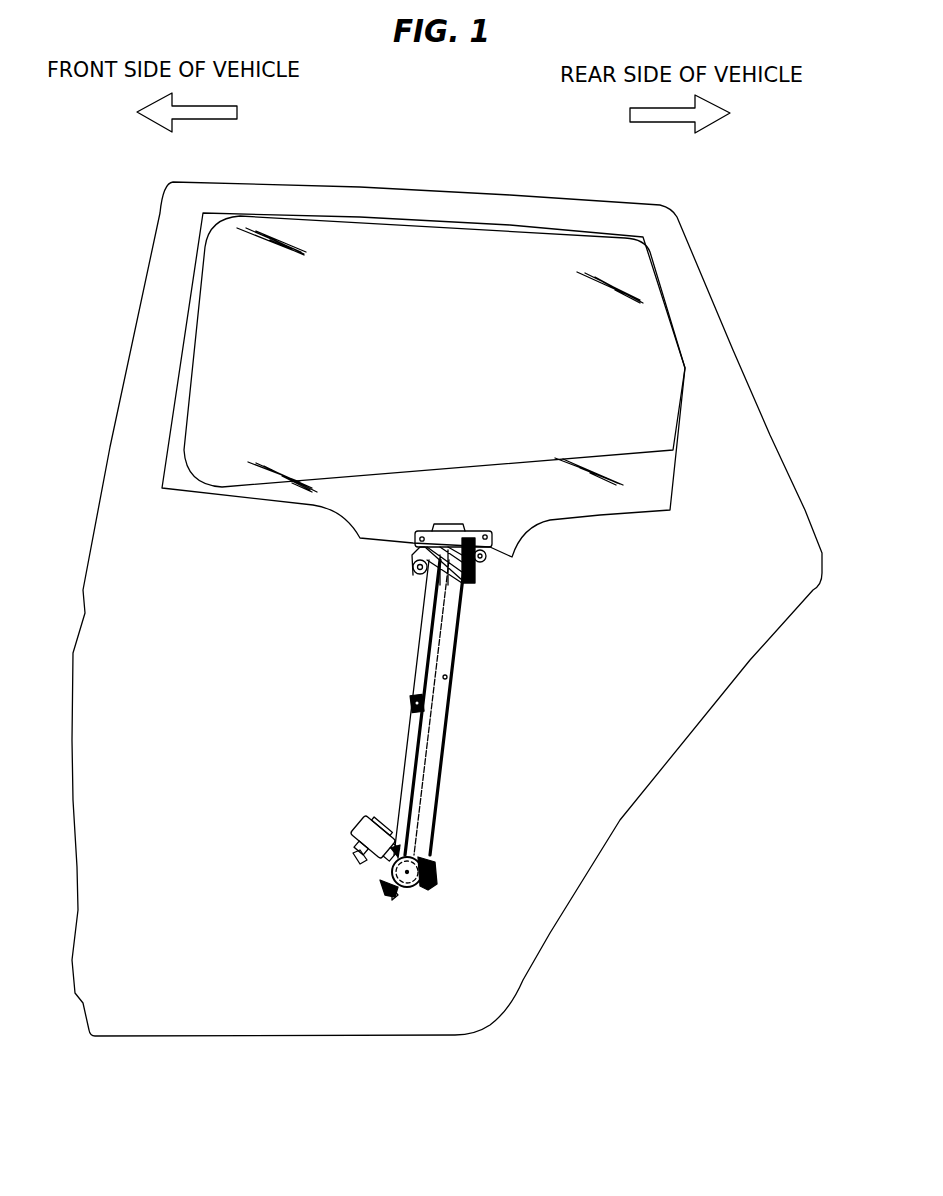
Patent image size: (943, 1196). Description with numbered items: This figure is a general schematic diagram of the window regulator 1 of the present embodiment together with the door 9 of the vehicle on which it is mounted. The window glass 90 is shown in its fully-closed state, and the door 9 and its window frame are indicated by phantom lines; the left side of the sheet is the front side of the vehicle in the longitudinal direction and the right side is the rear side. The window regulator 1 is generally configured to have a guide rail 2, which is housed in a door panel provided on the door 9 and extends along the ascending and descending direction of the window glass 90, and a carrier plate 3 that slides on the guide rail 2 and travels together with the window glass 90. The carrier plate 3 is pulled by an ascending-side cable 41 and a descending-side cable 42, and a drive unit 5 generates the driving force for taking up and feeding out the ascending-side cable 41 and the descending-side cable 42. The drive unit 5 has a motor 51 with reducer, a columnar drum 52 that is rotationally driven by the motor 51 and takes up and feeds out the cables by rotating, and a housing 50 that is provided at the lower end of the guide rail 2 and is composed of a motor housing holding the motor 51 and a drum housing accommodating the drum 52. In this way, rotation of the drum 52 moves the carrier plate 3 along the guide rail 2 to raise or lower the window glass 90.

The window regulator 1 is at (391, 529).
The guide rail 2 is at (427, 707).
The carrier plate 3 is at (494, 519).
The drive unit 5 is at (348, 787).
The door 9 is at (313, 183).
The ascending-side cable 41 is at (433, 752).
The descending-side cable 42 is at (420, 643).
The housing 50 is at (428, 888).
The motor 51 is at (362, 838).
The drum 52 is at (407, 883).
The window glass 90 is at (433, 238).